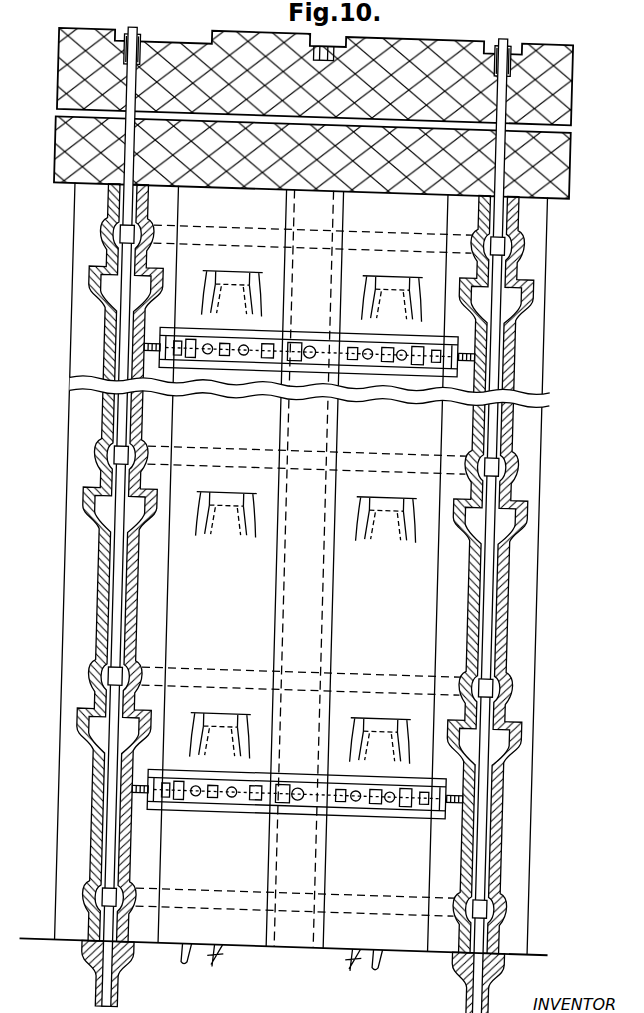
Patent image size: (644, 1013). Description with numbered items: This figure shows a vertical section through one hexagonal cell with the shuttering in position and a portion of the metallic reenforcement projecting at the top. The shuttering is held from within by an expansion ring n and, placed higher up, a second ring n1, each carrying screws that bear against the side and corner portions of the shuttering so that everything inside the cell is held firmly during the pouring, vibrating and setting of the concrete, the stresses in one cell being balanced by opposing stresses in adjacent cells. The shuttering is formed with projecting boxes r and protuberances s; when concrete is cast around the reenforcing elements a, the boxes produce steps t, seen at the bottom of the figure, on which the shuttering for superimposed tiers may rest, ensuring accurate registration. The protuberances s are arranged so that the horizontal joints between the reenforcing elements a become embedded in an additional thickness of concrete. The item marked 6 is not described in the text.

The reenforcing elements a is at (385, 75).
The projecting boxes r is at (521, 511).
The protuberances s is at (95, 456).
The steps t is at (109, 958).
The connecting pins 6 is at (142, 345).
The expansion ring n is at (382, 803).
The second ring n1 is at (412, 361).